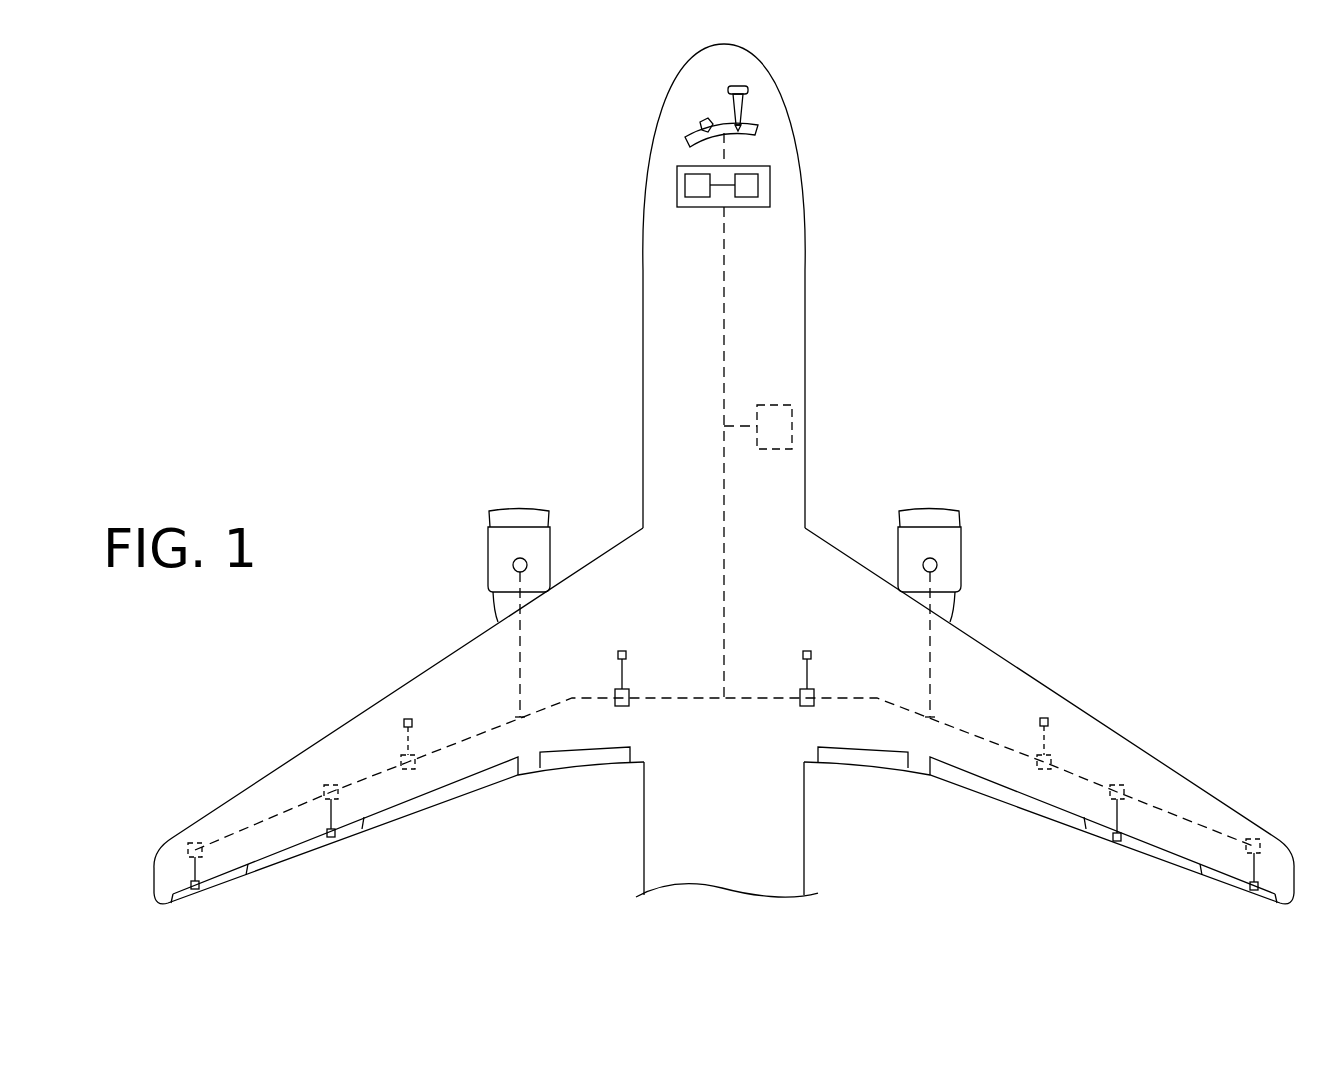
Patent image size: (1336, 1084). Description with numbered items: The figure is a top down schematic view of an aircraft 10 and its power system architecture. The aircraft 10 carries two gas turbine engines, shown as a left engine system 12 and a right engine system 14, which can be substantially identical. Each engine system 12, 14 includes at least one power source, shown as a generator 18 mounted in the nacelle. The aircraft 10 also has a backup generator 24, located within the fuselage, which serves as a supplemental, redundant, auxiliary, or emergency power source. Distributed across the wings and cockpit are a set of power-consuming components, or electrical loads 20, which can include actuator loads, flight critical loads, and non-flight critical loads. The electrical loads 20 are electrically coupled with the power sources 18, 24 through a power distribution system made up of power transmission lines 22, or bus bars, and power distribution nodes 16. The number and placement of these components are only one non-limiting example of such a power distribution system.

The aircraft 10 is at (518, 74).
The left engine system 12 is at (518, 517).
The right engine system 14 is at (943, 520).
The power distribution nodes 16 is at (414, 769).
The generator 18 is at (532, 560).
The electrical loads 20 is at (690, 198).
The power transmission lines 22 is at (724, 393).
The backup generator 24 is at (787, 440).